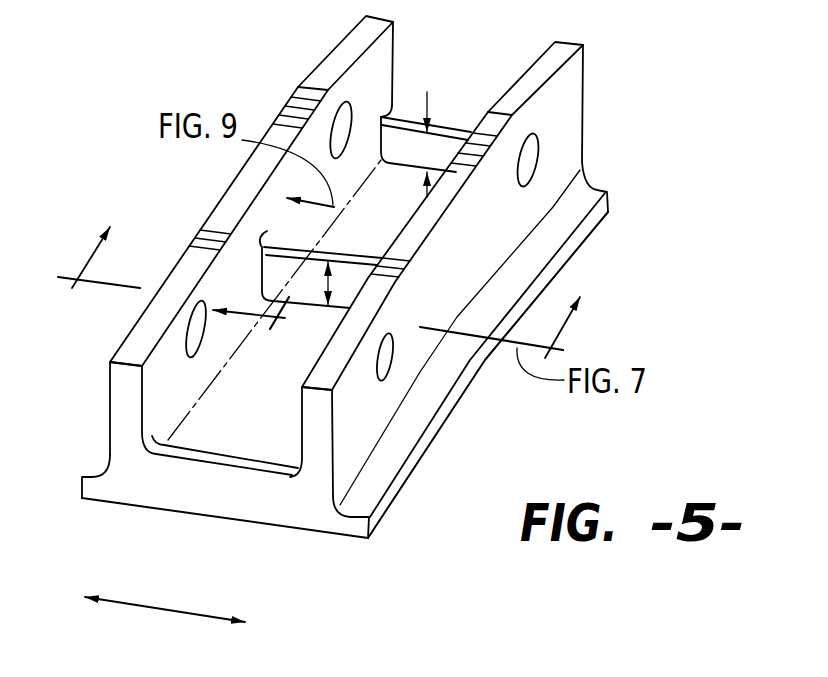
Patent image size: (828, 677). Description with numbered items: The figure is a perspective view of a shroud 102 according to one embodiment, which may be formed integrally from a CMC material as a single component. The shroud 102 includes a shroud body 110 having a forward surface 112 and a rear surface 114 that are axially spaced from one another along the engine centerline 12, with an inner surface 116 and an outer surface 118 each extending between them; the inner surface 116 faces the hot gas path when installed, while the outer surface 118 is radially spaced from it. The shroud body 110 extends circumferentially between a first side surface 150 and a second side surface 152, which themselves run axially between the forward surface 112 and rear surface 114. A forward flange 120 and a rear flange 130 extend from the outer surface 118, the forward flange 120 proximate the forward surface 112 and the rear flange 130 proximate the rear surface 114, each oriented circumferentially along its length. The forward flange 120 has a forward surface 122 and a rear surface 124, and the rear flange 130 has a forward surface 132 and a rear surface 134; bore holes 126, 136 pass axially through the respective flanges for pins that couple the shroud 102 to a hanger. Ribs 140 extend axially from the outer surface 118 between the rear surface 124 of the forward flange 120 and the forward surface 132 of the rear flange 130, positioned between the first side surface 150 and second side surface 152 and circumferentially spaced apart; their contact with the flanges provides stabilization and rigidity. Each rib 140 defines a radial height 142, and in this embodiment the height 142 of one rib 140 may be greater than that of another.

The shroud 102 is at (129, 165).
The shroud body 110 is at (213, 491).
The forward surface 112 is at (81, 480).
The rear surface 114 is at (381, 508).
The inner surface 116 is at (258, 526).
The outer surface 118 is at (330, 247).
The forward flange 120 is at (128, 312).
The forward surface of forward flange 122 is at (109, 388).
The rear surface of forward flange 124 is at (167, 383).
The bore holes 126 is at (198, 303).
The rear flange 130 is at (367, 403).
The forward surface of rear flange 132 is at (301, 411).
The rear surface of rear flange 134 is at (358, 430).
The bore holes 136 is at (392, 345).
The ribs 140 is at (403, 113).
The height 142 is at (429, 110).
The first side surface 150 is at (315, 512).
The second side surface 152 is at (603, 172).
The centerline 12 is at (160, 612).